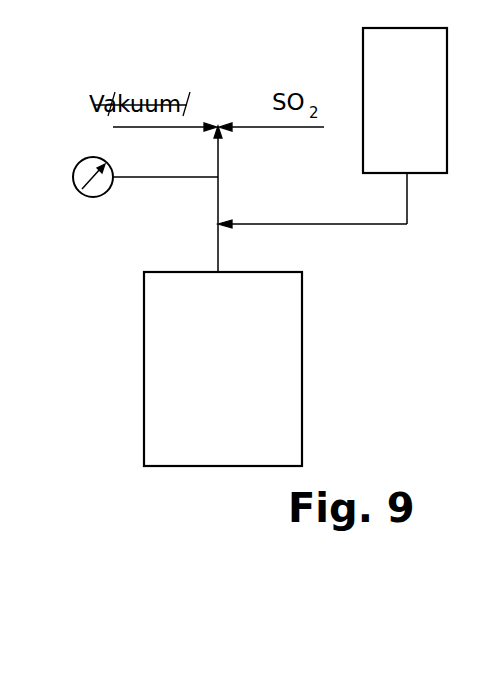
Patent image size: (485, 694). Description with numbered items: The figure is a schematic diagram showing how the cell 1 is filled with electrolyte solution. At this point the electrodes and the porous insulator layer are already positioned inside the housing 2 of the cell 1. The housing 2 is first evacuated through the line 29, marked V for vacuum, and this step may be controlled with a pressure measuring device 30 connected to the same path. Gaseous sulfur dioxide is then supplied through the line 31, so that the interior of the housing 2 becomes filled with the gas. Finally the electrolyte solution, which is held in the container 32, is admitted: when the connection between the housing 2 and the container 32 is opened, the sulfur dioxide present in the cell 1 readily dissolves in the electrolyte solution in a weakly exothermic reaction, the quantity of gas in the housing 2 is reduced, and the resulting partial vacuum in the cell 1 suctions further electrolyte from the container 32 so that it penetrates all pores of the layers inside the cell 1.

The cell 1 is at (267, 296).
The housing 2 is at (312, 338).
The line 29 is at (173, 128).
The pressure measuring device 30 is at (96, 198).
The line 31 is at (247, 128).
The container 32 is at (430, 165).